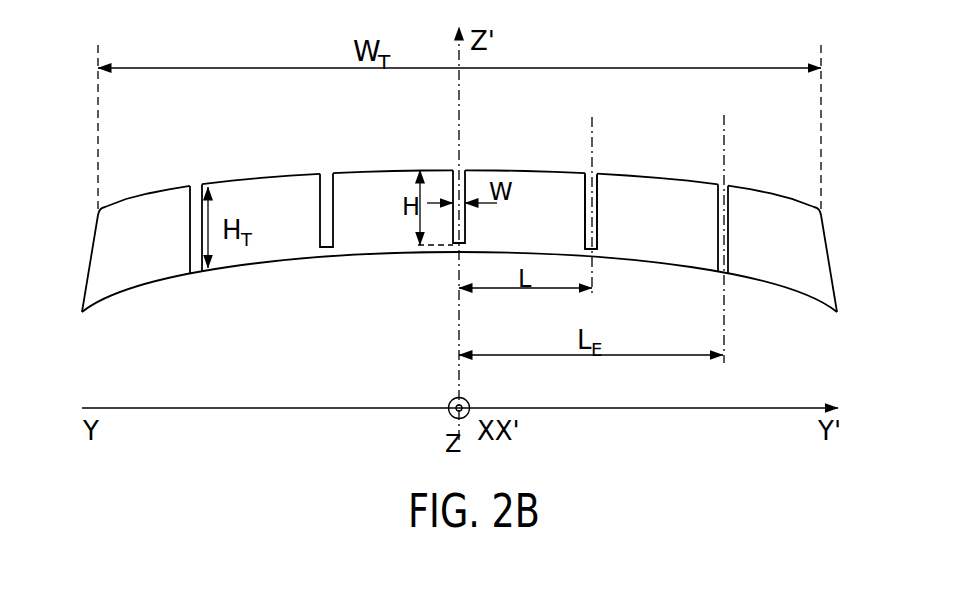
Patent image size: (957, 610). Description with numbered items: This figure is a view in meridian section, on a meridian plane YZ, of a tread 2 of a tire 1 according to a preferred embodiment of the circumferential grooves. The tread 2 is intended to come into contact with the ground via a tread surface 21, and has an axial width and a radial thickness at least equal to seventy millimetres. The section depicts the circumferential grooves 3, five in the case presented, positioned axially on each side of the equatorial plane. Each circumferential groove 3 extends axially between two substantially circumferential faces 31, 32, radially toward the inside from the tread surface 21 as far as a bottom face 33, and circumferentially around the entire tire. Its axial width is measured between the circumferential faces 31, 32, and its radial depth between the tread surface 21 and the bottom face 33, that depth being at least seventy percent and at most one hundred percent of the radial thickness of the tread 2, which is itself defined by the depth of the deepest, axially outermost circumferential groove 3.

The tire 1 is at (77, 190).
The tread 2 is at (832, 250).
The tread surface 21 is at (260, 175).
The circumferential groove 3 is at (463, 172).
The circumferential face 31 is at (585, 213).
The circumferential face 32 is at (598, 212).
The bottom face 33 is at (597, 250).